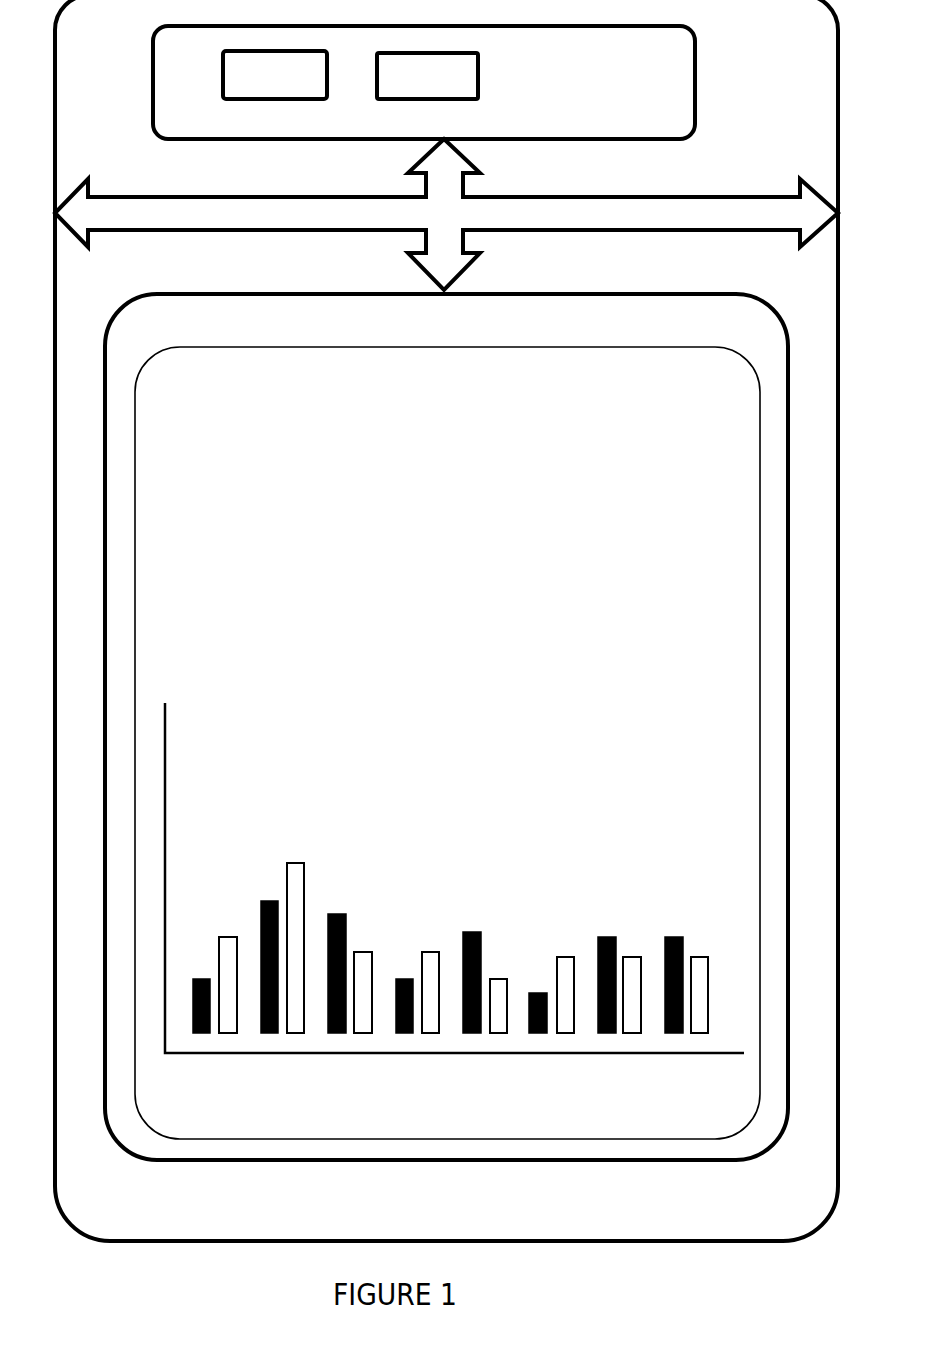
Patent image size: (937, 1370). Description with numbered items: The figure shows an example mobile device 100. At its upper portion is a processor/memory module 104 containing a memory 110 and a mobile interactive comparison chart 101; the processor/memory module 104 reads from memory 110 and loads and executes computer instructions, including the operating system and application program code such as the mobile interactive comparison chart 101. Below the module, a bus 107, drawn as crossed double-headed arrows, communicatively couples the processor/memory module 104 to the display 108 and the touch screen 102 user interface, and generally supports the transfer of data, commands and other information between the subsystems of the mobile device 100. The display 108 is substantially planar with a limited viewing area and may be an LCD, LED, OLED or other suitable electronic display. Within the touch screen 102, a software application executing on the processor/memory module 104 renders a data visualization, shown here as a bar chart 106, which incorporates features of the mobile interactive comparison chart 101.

The mobile device 100 is at (446, 620).
The processor/memory module 104 is at (424, 82).
The memory 110 is at (275, 75).
The mobile interactive comparison chart 101 is at (427, 76).
The bus 107 is at (446, 214).
The display 108 is at (446, 727).
The touch screen 102 is at (447, 743).
The bar chart 106 is at (454, 878).